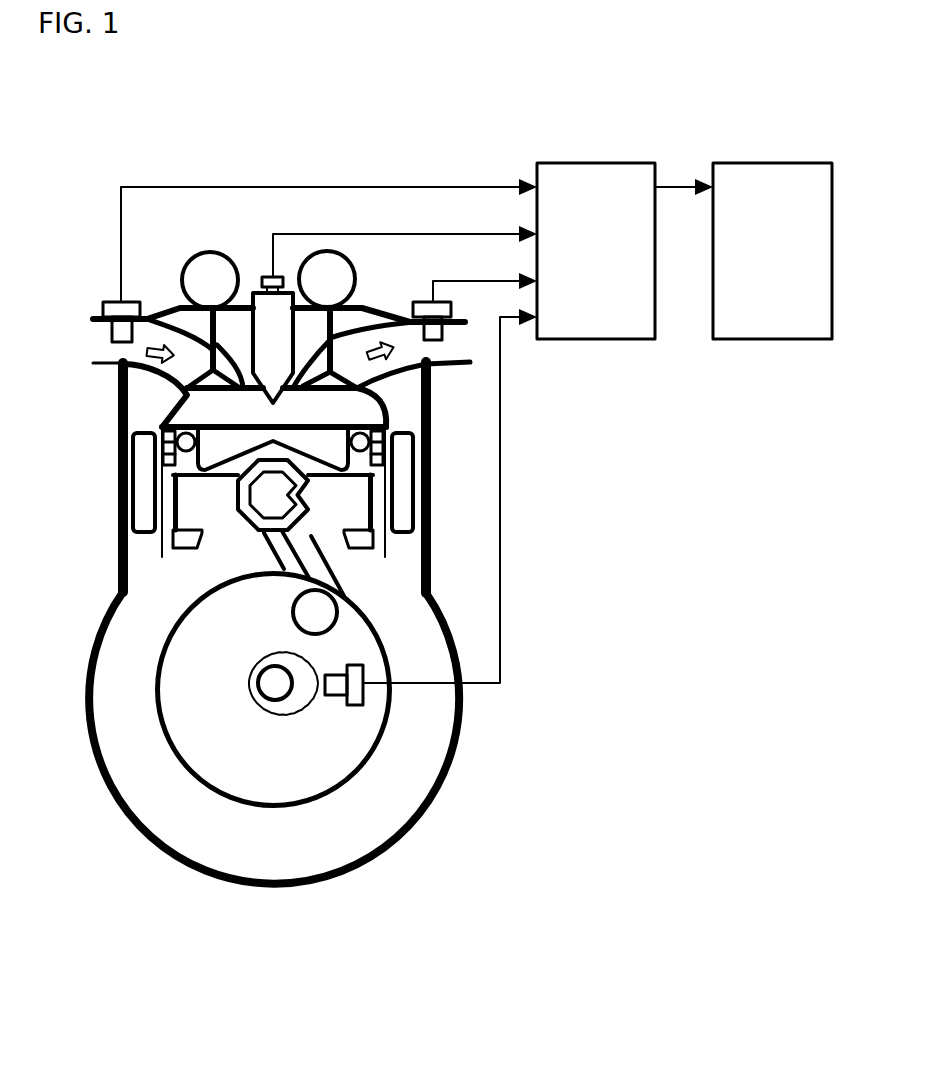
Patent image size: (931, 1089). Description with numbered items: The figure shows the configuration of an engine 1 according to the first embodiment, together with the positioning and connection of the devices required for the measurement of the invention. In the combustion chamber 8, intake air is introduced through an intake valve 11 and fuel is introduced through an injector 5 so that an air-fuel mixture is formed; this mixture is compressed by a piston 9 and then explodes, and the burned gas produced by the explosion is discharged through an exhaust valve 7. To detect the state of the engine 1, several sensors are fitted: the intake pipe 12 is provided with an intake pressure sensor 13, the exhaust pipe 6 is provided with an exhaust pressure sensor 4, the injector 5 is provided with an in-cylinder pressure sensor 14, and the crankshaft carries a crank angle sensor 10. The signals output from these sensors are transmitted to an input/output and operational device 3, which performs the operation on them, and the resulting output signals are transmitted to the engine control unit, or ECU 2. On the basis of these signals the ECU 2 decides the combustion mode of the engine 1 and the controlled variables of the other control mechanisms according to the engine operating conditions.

The engine 1 is at (120, 522).
The engine control unit (ECU) 2 is at (775, 328).
The input/output and operational device 3 is at (638, 328).
The exhaust pressure sensor 4 is at (418, 300).
The injector 5 is at (285, 292).
The exhaust pipe 6 is at (432, 368).
The exhaust valve 7 is at (428, 383).
The combustion chamber 8 is at (370, 410).
The piston 9 is at (366, 548).
The crank angle sensor 10 is at (366, 697).
The intake valve 11 is at (170, 400).
The intake pipe 12 is at (175, 378).
The intake pressure sensor 13 is at (112, 300).
The in-cylinder pressure sensor 14 is at (265, 276).